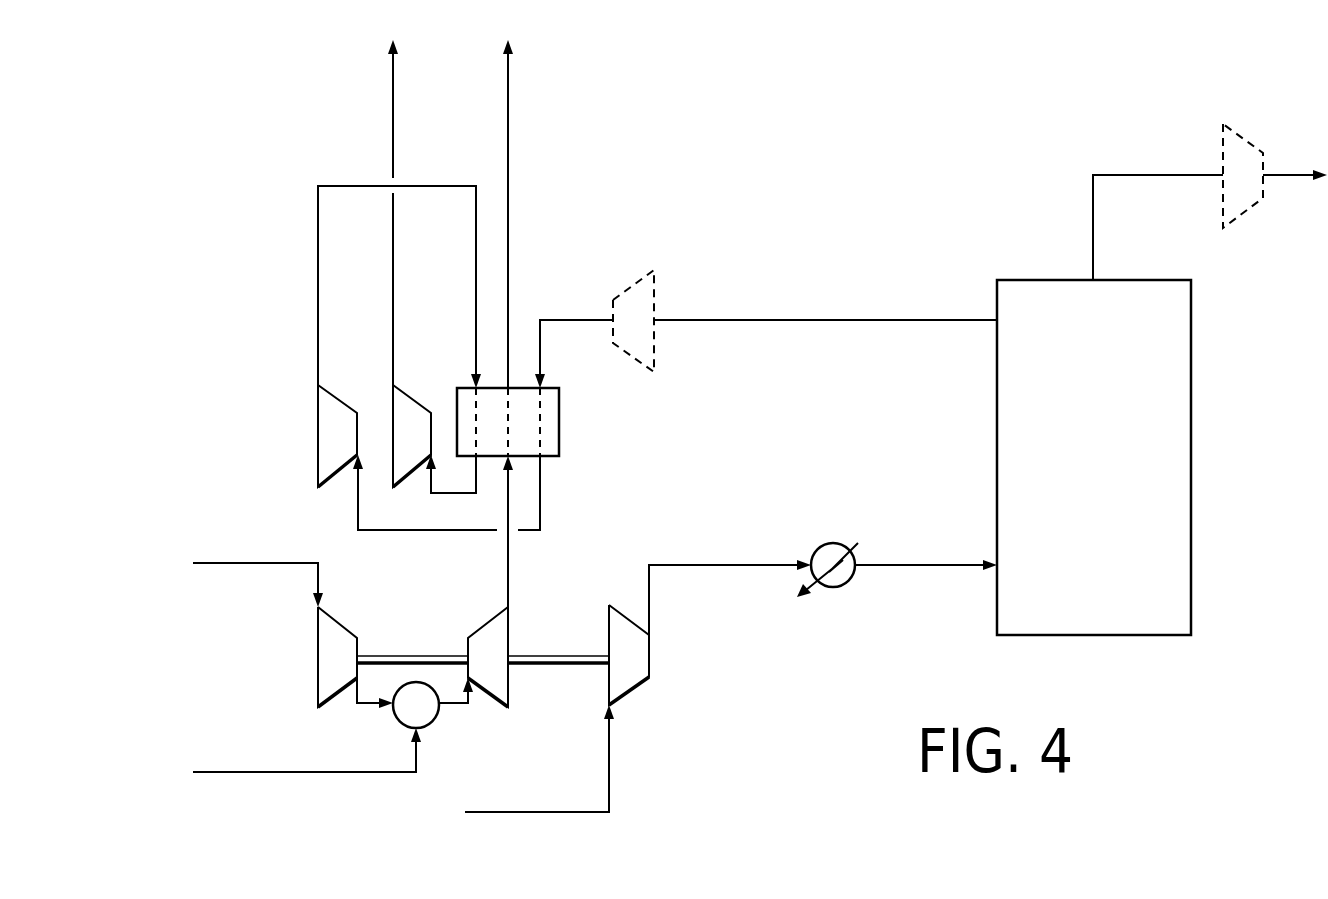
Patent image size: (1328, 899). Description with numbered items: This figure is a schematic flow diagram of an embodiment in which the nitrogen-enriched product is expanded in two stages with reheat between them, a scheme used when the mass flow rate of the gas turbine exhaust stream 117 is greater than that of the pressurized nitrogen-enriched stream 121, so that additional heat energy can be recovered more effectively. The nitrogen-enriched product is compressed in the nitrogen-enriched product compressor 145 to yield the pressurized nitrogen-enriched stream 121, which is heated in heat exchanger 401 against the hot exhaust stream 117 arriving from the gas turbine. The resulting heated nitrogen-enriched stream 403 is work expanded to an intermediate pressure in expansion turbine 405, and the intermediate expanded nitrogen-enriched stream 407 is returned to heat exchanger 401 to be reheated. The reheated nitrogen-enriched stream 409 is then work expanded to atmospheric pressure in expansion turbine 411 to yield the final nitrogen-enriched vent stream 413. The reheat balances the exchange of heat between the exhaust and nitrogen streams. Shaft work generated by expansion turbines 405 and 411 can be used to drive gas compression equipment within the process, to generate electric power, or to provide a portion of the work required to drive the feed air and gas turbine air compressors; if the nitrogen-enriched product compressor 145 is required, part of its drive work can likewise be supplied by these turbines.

The heat exchanger 401 is at (560, 420).
The heated nitrogen-enriched stream 403 is at (444, 531).
The expansion turbine 405 is at (318, 425).
The intermediate expanded nitrogen-enriched stream 407 is at (318, 270).
The reheated nitrogen-enriched stream 409 is at (431, 484).
The expansion turbine 411 is at (431, 412).
The final nitrogen-enriched vent stream 413 is at (393, 124).
The expansion turbine exhaust stream 117 is at (509, 570).
The pressurized nitrogen-enriched stream 121 is at (576, 320).
The nitrogen-enriched product compressor 145 is at (655, 300).